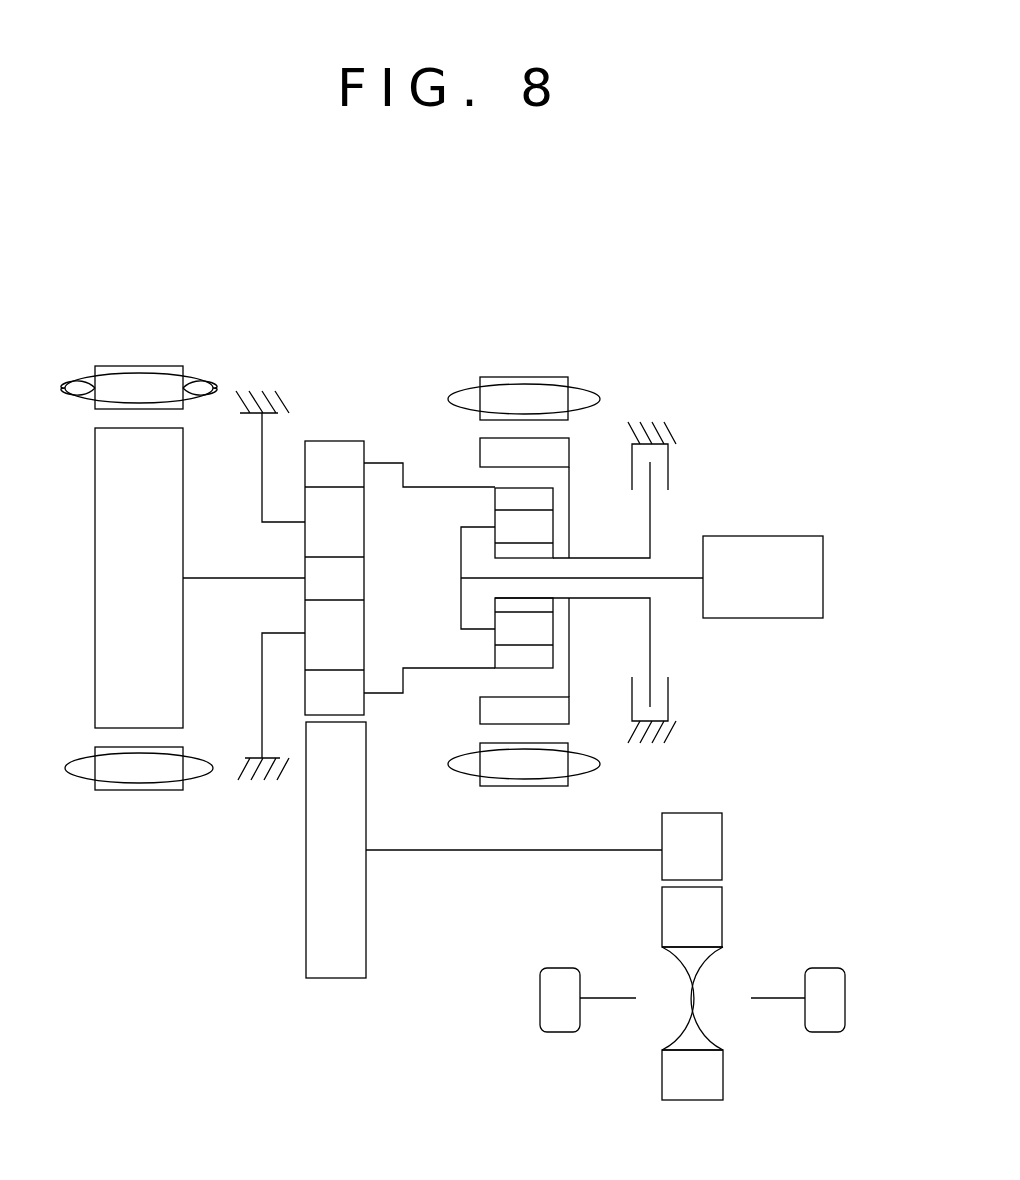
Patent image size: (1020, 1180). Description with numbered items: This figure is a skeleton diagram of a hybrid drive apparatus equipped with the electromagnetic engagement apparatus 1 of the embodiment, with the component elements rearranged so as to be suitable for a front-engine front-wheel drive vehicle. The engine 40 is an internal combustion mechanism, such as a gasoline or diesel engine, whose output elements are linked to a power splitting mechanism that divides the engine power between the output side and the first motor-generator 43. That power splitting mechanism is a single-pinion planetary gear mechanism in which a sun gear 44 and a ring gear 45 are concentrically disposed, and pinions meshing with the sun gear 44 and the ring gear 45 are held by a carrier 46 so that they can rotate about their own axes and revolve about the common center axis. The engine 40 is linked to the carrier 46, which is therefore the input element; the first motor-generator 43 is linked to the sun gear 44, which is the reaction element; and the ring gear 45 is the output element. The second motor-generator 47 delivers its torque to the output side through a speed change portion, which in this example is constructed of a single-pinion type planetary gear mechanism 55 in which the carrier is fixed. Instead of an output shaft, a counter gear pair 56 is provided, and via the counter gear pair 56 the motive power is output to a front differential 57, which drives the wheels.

The electromagnetic engagement apparatus 1 is at (650, 405).
The engine 40 is at (810, 536).
The first motor-generator 43 is at (516, 350).
The sun gear 44 is at (545, 605).
The ring gear 45 is at (487, 447).
The carrier 46 is at (458, 545).
The second motor-generator 47 is at (140, 348).
The single-pinion type planetary gear mechanism 55 is at (345, 402).
The counter gear pair 56 is at (288, 856).
The front differential 57 is at (740, 960).